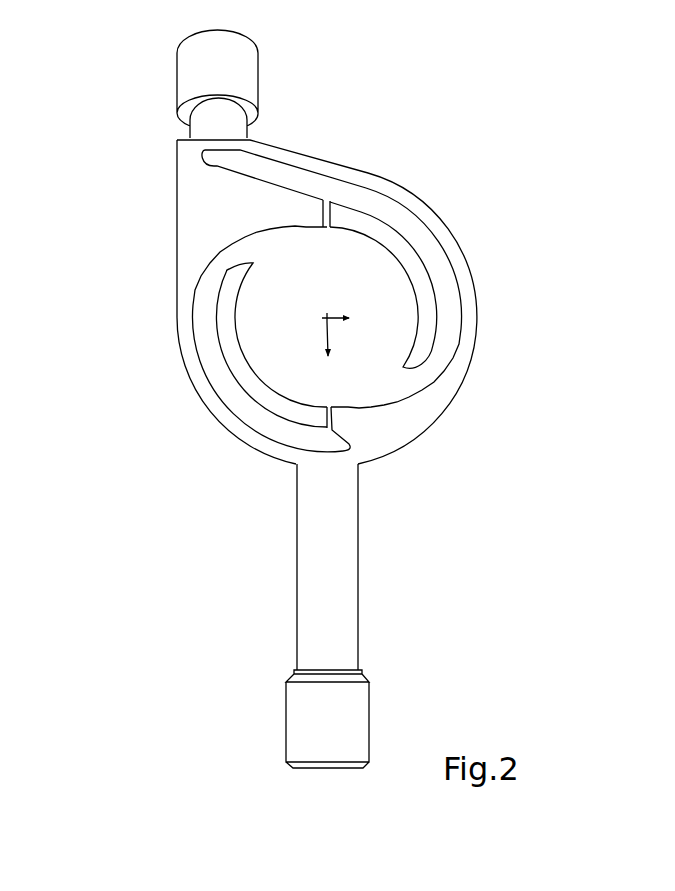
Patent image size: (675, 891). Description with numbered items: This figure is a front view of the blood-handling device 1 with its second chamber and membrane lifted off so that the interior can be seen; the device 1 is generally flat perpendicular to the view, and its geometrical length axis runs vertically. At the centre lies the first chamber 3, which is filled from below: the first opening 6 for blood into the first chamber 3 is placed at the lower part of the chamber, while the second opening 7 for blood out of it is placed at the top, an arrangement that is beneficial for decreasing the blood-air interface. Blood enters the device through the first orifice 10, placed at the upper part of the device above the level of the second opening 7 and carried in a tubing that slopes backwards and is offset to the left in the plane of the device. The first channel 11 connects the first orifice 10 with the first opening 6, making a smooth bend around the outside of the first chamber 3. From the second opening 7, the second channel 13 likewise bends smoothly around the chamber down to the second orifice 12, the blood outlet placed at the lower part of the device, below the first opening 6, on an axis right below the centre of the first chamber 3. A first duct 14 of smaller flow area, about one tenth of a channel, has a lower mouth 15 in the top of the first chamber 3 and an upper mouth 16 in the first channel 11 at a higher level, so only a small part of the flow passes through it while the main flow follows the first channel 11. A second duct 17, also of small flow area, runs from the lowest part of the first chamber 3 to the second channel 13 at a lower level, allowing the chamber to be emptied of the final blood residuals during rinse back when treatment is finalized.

The device 1 is at (124, 211).
The first chamber 3 is at (382, 328).
The first opening 6 is at (400, 384).
The second opening 7 is at (250, 252).
The first orifice 10 is at (207, 32).
The first channel 11 is at (442, 284).
The second orifice 12 is at (303, 768).
The second channel 13 is at (250, 408).
The first duct 14 is at (333, 215).
The lower mouth 15 is at (328, 314).
The upper mouth 16 is at (325, 262).
The second duct 17 is at (334, 429).